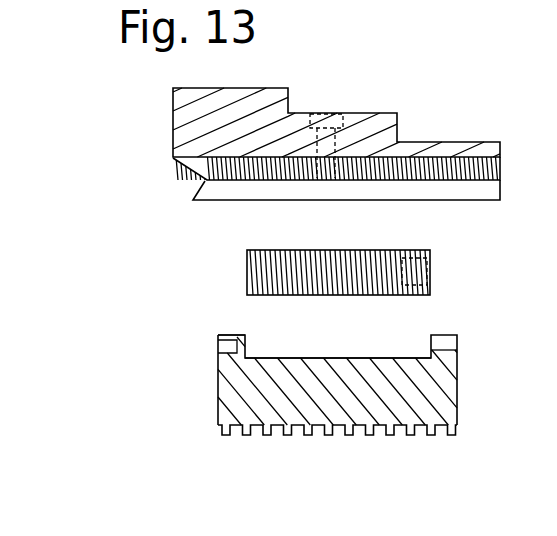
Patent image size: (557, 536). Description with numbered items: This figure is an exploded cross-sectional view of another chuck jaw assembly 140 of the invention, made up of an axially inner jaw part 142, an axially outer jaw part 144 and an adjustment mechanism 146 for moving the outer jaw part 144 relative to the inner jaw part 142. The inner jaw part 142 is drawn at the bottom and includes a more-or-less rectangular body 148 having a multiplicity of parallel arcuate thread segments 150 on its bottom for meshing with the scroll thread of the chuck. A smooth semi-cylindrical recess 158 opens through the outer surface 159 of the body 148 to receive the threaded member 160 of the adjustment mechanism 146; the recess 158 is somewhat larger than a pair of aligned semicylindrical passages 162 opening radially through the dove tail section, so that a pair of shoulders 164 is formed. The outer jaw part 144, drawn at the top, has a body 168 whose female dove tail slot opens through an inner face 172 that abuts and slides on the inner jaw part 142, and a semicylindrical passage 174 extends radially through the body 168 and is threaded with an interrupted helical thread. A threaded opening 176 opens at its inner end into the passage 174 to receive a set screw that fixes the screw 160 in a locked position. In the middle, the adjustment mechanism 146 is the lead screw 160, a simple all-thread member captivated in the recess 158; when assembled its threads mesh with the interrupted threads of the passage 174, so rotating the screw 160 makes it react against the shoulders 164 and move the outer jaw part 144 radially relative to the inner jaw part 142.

The chuck jaw assembly 140 is at (547, 103).
The axially inner jaw part 142 is at (464, 365).
The axially outer jaw part 144 is at (124, 152).
The adjustment mechanism 146 is at (484, 298).
The body 148 is at (230, 387).
The arcuate thread segments 150 is at (303, 432).
The semi-cylindrical recess 158 is at (428, 338).
The outer surface 159 is at (232, 335).
The threaded member 160 is at (441, 273).
The semicylindrical passages 162 is at (230, 342).
The shoulders 164 is at (250, 337).
The body 168 is at (183, 102).
The inner face 172 is at (500, 201).
The semicylindrical passage 174 is at (500, 160).
The threaded opening 176 is at (330, 113).